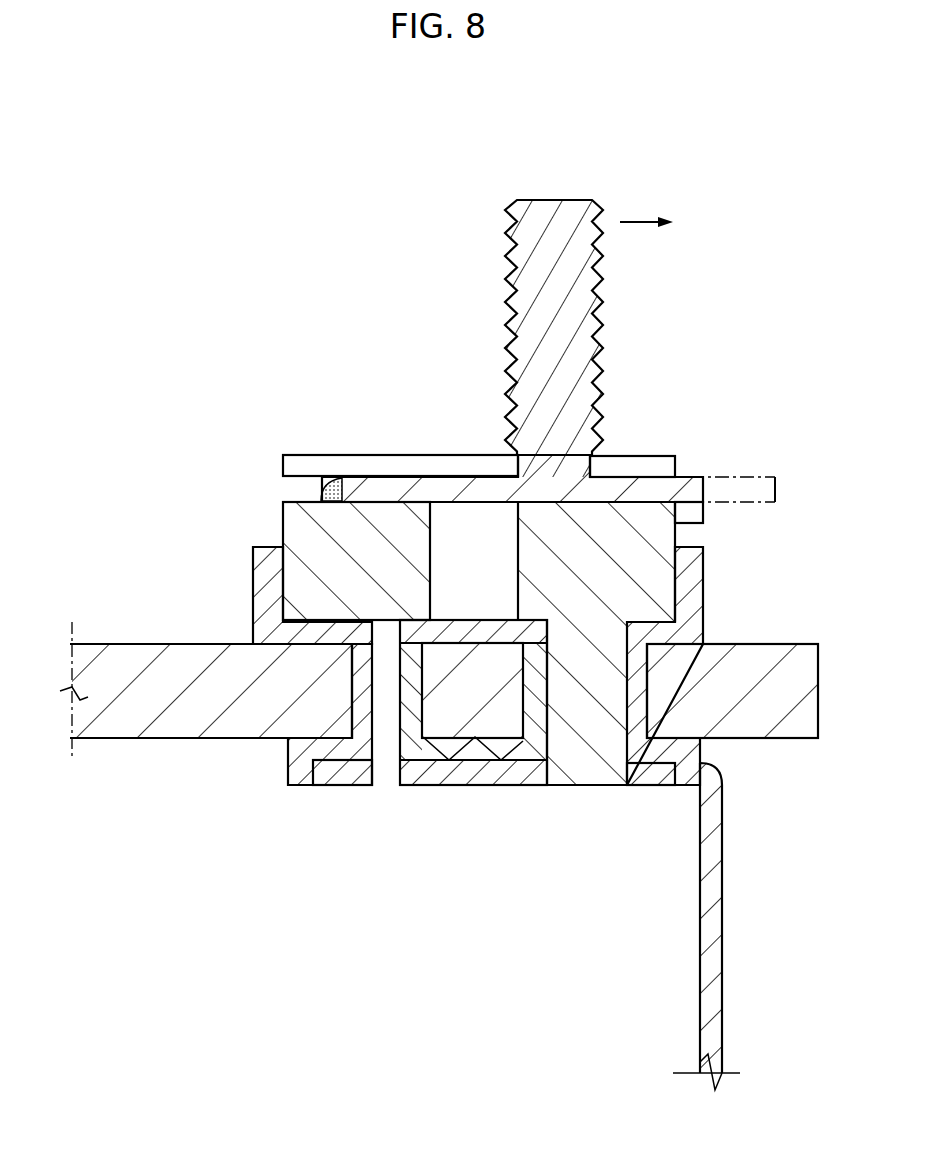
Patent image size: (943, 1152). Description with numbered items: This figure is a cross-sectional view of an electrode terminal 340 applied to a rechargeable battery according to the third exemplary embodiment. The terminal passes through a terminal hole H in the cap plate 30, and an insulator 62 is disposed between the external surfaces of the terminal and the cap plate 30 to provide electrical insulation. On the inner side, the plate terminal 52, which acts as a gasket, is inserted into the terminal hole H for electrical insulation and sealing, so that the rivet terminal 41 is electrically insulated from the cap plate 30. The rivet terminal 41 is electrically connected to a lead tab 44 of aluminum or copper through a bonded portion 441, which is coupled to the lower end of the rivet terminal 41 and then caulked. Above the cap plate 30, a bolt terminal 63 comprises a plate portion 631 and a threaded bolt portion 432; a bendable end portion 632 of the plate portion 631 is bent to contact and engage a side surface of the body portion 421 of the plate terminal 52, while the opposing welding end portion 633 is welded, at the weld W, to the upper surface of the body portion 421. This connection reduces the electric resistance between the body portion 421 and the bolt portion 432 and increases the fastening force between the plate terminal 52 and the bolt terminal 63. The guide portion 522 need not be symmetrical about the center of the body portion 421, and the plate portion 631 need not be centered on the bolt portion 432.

The electrode terminal 340 is at (322, 257).
The cap plate 30 is at (137, 657).
The rivet terminal 41 is at (603, 782).
The body portion 421 is at (303, 528).
The bonded portion 441 is at (442, 786).
The lead tab 44 is at (703, 997).
The plate terminal 52 is at (206, 353).
The guide portion 522 is at (317, 457).
The insulator 62 is at (256, 580).
The bolt terminal 63 is at (688, 256).
The plate portion 631 is at (644, 485).
The bendable end portion 632 is at (698, 510).
The welding end portion 633 is at (377, 490).
The bolt portion 432 is at (598, 272).
The weld W is at (333, 476).
The terminal hole H is at (652, 683).